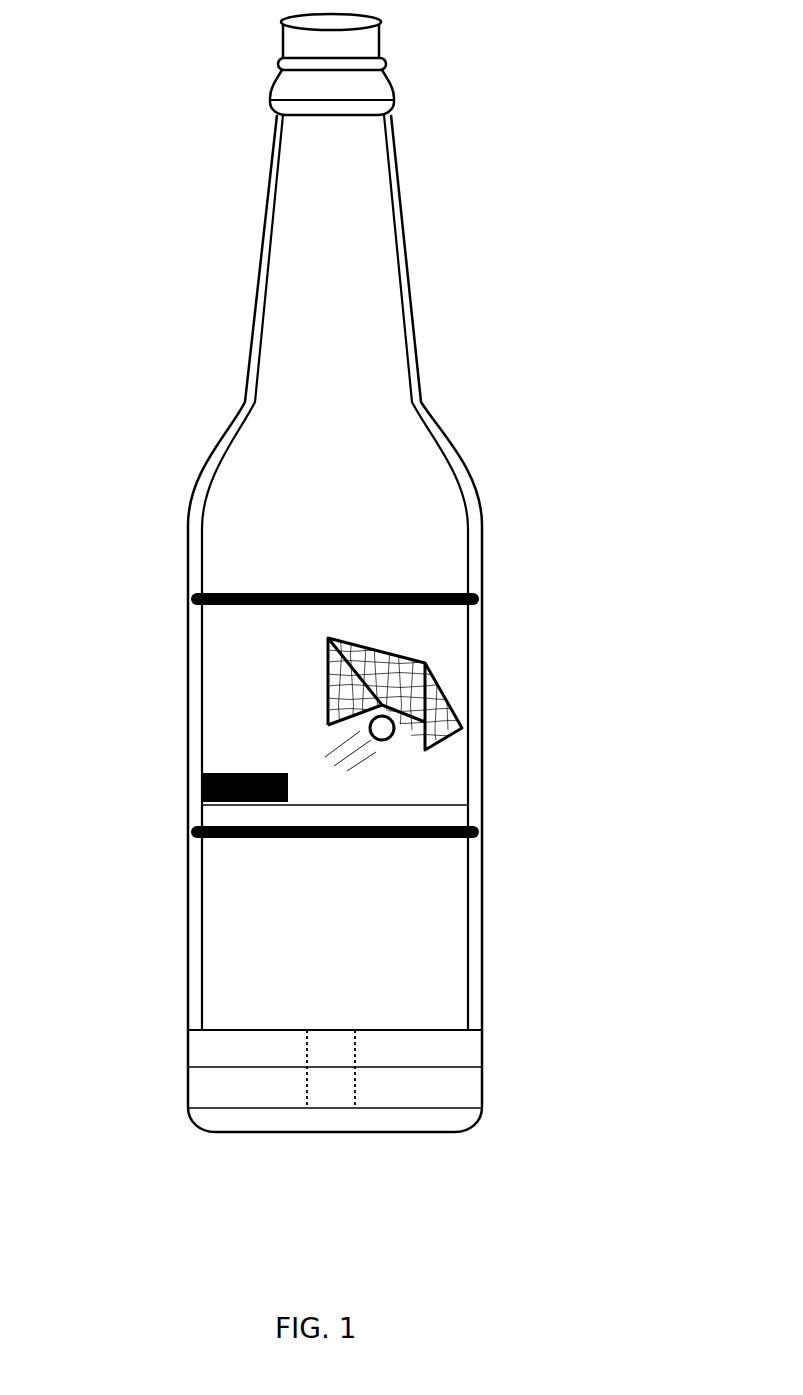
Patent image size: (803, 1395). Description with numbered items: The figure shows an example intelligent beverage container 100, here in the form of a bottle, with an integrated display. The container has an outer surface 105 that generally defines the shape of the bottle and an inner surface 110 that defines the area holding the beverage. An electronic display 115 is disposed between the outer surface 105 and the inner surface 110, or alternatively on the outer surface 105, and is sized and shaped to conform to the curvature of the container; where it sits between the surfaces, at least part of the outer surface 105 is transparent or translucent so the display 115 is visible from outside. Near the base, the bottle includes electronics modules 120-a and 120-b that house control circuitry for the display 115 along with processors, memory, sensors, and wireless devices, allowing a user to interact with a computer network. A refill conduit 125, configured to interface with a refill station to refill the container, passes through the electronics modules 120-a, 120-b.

The intelligent beverage container 100 is at (124, 1268).
The outer surface 105 is at (188, 540).
The inner surface 110 is at (458, 491).
The electronic display 115 is at (212, 646).
The electronics module 120-a is at (188, 1050).
The electronics module 120-b is at (188, 1093).
The refill conduit 125 is at (333, 1097).